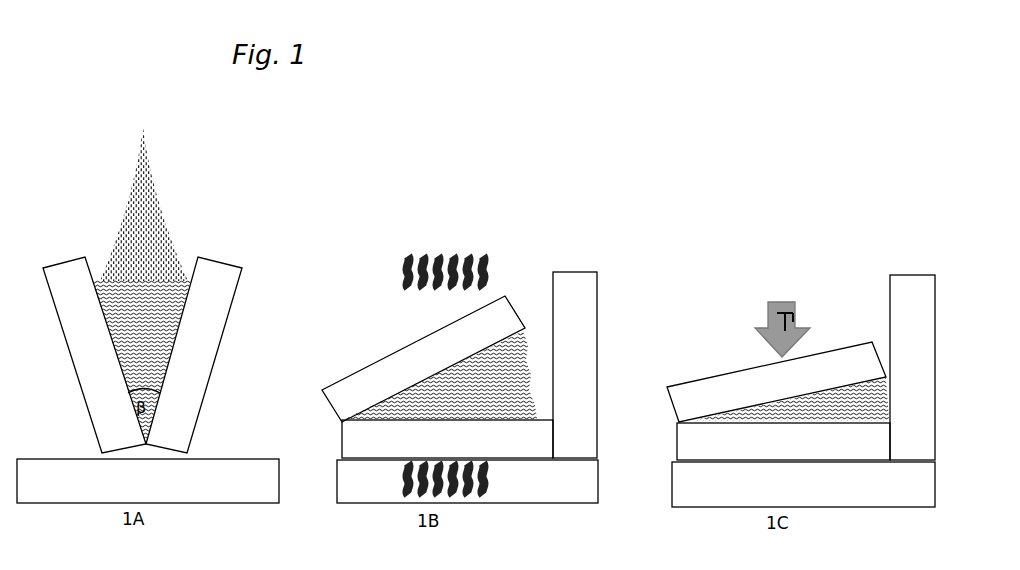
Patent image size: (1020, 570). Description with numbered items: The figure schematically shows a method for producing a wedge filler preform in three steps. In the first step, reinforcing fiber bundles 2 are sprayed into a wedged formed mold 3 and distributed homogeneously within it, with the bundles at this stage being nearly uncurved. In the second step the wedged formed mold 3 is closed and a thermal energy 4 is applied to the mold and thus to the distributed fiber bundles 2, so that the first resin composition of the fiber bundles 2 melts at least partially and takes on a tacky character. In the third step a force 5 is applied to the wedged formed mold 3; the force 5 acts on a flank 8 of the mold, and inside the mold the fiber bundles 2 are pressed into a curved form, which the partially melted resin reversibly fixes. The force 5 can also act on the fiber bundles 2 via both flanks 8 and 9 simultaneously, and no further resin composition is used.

The reinforcing fiber bundles 2 is at (175, 186).
The wedged formed mold 3 is at (244, 315).
The thermal energy 4 is at (470, 244).
The force 5 is at (807, 310).
The flank 8 is at (859, 356).
The flank 9 is at (783, 441).